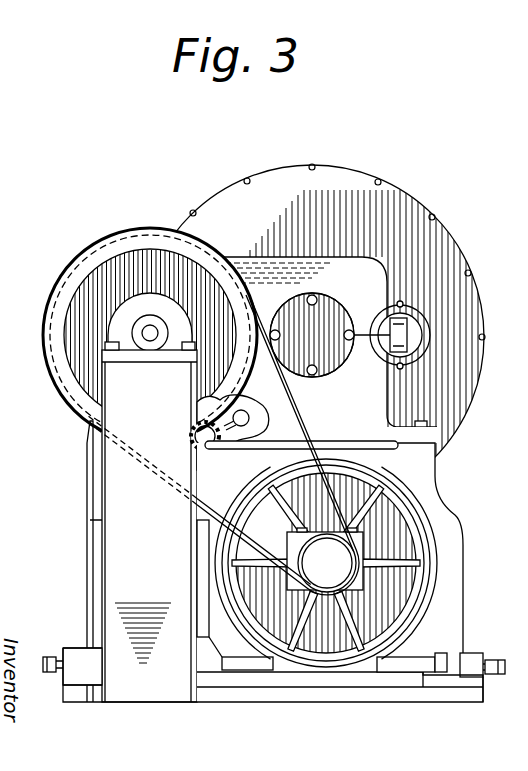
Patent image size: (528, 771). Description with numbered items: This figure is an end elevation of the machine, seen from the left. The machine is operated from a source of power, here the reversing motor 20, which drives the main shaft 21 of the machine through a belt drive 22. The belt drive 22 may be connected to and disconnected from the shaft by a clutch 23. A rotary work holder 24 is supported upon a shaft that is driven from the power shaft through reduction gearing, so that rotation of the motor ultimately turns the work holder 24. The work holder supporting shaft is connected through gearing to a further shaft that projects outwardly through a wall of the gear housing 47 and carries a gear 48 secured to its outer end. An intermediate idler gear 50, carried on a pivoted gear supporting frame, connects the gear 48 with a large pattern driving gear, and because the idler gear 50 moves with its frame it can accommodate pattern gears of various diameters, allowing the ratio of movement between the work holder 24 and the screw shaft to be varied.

The reversing motor 20 is at (326, 563).
The main shaft 21 is at (150, 341).
The belt drive 22 is at (78, 256).
The clutch 23 is at (150, 335).
The rotary work holder 24 is at (466, 347).
The gear housing 47 is at (370, 283).
The gear 48 is at (200, 408).
The intermediate idler gear 50 is at (192, 437).